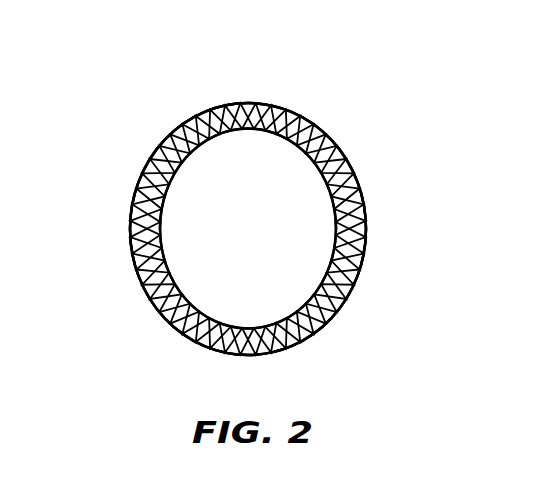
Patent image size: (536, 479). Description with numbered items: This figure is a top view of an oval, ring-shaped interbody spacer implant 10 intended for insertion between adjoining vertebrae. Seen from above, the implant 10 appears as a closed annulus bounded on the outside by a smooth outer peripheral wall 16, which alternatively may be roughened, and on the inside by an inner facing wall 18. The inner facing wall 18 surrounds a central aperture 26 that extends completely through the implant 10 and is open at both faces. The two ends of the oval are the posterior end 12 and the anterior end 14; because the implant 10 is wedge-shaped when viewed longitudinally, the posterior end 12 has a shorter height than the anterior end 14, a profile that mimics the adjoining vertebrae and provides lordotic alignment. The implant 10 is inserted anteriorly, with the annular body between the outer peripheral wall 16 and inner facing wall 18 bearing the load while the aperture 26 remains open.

The implant 10 is at (313, 92).
The posterior end 12 is at (370, 223).
The anterior end 14 is at (129, 198).
The outer peripheral wall 16 is at (137, 282).
The inner facing wall 18 is at (161, 196).
The aperture 26 is at (261, 242).